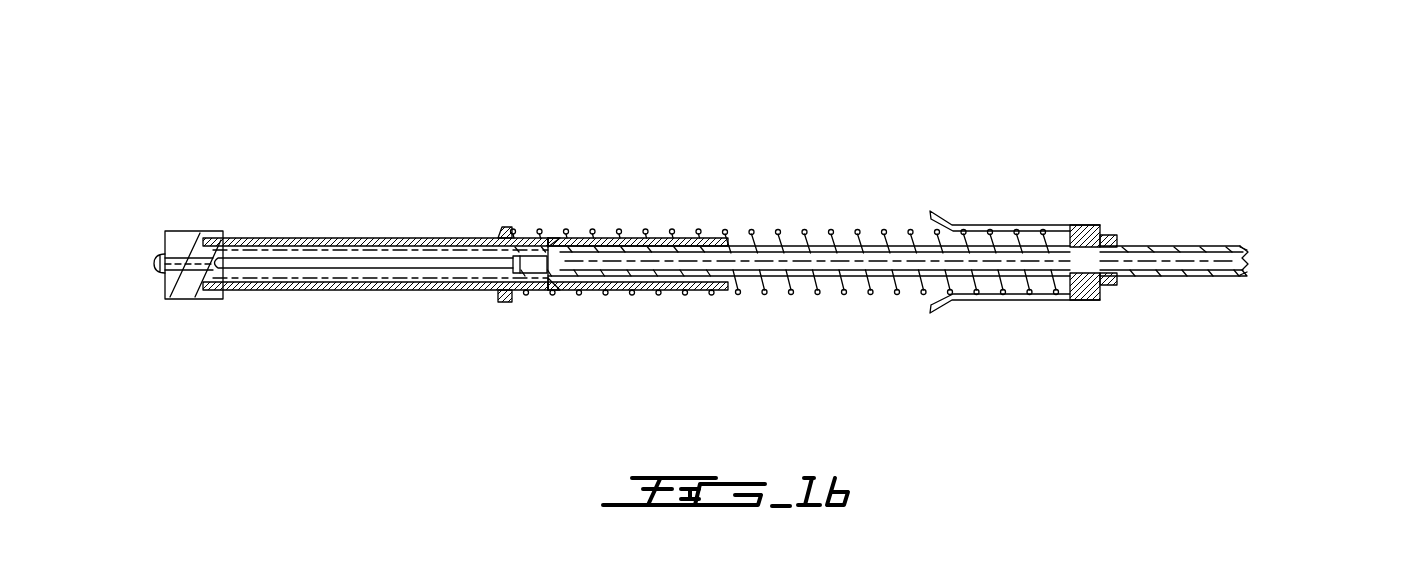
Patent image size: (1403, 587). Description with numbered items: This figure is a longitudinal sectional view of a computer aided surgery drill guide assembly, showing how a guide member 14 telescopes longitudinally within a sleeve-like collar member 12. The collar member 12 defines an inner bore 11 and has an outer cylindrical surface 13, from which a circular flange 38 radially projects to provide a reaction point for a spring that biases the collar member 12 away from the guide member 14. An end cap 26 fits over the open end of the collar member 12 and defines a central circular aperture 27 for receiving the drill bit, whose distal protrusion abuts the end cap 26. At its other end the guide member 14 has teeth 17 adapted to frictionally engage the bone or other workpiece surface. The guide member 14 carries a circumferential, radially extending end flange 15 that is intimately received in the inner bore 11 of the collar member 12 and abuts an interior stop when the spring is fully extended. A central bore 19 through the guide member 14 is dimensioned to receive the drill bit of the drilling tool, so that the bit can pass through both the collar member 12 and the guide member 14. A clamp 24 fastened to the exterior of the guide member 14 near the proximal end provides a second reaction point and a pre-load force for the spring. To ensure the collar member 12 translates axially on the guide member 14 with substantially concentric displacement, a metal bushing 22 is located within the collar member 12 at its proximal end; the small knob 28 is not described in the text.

The inner bore 11 is at (307, 285).
The collar member 12 is at (430, 214).
The outer cylindrical surface 13 is at (362, 290).
The guide member 14 is at (1135, 245).
The end flange 15 is at (557, 262).
The teeth 17 is at (1252, 261).
The central bore 19 is at (932, 248).
The metal bushing 22 is at (738, 240).
The clamp 24 is at (1090, 302).
The end cap 26 is at (187, 232).
The central circular aperture 27 is at (178, 278).
The knob 28 is at (157, 263).
The circular flange 38 is at (500, 302).